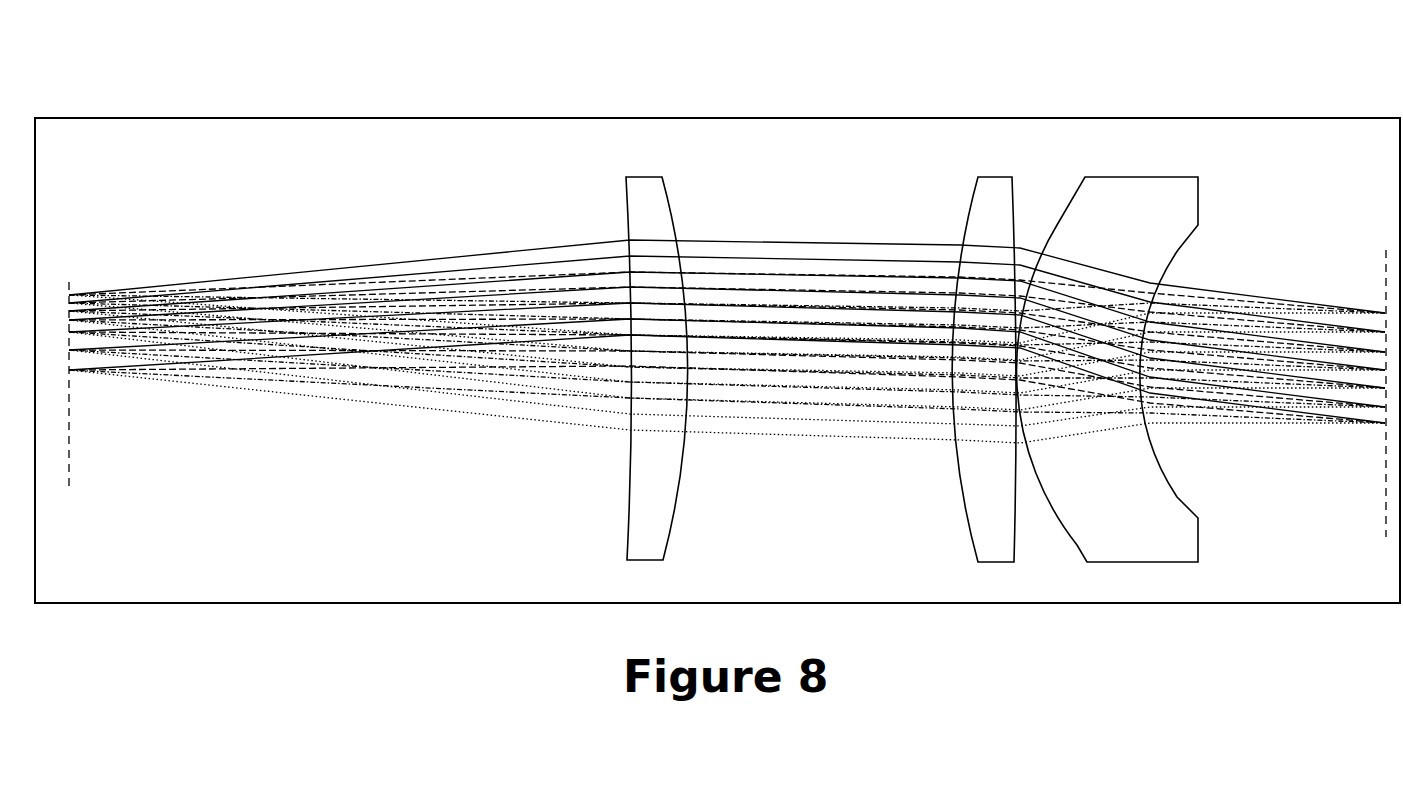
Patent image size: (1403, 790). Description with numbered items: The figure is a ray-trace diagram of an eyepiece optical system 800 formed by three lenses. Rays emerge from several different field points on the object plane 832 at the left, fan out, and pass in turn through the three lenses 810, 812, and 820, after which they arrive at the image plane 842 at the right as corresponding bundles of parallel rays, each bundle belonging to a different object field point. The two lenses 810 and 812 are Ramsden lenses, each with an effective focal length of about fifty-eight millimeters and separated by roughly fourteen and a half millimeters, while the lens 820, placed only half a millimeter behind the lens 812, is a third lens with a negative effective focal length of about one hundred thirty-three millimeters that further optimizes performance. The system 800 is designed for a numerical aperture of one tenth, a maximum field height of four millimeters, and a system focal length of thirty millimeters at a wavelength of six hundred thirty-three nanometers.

The eyepiece optical system 800 is at (210, 82).
The first lens 810 is at (642, 497).
The second lens 812 is at (977, 485).
The third lens 820 is at (1168, 495).
The object plane 832 is at (70, 432).
The image plane 842 is at (1383, 280).